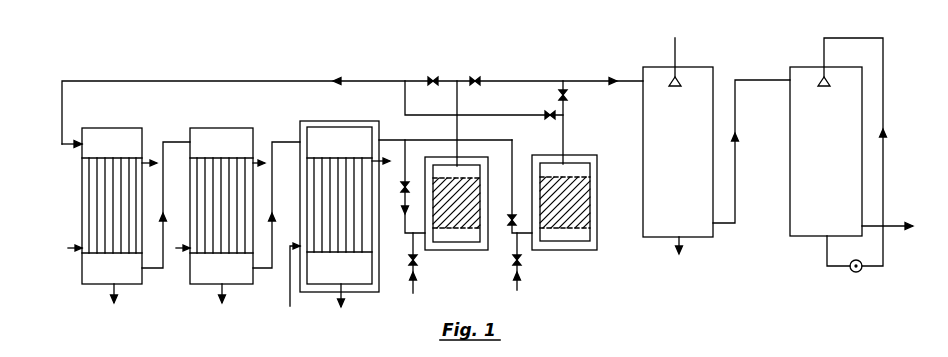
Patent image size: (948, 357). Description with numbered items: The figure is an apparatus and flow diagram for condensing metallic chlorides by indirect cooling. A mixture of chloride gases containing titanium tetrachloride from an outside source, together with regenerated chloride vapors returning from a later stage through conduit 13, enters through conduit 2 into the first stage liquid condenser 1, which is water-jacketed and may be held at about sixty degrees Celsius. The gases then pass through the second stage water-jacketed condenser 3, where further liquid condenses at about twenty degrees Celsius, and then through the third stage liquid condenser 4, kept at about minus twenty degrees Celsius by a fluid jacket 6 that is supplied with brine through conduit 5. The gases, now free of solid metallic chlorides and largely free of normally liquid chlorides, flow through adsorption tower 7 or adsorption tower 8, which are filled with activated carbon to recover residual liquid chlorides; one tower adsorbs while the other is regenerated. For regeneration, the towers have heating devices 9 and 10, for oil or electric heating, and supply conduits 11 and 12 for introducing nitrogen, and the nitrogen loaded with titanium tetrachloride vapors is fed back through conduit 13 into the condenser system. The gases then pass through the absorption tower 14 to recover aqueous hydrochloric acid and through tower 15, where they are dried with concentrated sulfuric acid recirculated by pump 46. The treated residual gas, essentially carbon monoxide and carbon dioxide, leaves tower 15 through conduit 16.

The first stage liquid condenser 1 is at (123, 215).
The conduit 2 is at (62, 144).
The second stage water-jacketed condenser 3 is at (235, 215).
The third stage liquid condenser 4 is at (419, 217).
The conduit 5 is at (290, 306).
The fluid jacket 6 is at (376, 292).
The adsorption tower 7 is at (456, 203).
The adsorption tower 8 is at (565, 202).
The heating device 9 is at (482, 250).
The heating device 10 is at (592, 250).
The supply conduit 11 is at (417, 266).
The supply conduit 12 is at (521, 266).
The conduit 13 is at (352, 115).
The absorption tower 14 is at (716, 151).
The tower 15 is at (838, 146).
The conduit 16 is at (898, 224).
The pump 46 is at (857, 277).